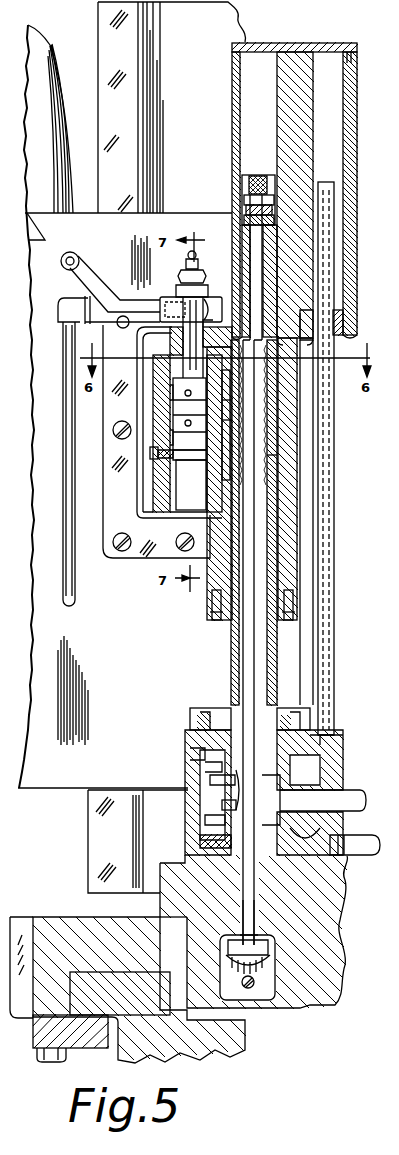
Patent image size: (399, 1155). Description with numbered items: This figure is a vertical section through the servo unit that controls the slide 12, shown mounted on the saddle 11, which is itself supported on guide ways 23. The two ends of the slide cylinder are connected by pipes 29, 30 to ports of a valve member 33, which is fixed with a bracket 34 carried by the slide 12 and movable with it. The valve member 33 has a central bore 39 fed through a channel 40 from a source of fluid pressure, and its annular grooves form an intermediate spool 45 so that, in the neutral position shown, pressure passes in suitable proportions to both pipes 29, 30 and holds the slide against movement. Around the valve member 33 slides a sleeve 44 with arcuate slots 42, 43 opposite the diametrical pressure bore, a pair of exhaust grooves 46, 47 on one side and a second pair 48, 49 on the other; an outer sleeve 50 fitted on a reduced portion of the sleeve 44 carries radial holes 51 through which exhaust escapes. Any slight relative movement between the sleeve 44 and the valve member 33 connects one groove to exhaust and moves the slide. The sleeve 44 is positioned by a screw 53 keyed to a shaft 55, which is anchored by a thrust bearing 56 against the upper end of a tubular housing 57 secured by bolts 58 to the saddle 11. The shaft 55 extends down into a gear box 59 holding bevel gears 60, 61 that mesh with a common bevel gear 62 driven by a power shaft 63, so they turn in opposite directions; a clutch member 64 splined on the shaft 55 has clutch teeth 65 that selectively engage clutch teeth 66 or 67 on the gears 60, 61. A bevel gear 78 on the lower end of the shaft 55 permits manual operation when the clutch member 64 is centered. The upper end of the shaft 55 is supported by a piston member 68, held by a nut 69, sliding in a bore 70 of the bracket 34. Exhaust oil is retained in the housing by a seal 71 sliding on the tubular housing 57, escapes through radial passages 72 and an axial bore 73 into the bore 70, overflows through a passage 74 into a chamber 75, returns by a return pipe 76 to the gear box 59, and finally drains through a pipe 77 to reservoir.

The saddle 11 is at (225, 33).
The slide 12 is at (78, 779).
The guide ways 23 is at (77, 976).
The pipe 29 is at (70, 272).
The pipe 30 is at (63, 544).
The valve member 33 is at (172, 298).
The bracket 34 is at (112, 513).
The central bore 39 is at (216, 296).
The channel 40 is at (185, 259).
The arcuate slot 42 is at (150, 421).
The arcuate slot 43 is at (233, 405).
The sleeve 44 is at (152, 361).
The intermediate spool 45 is at (238, 416).
The arcuate exhaust groove 46 is at (172, 416).
The arcuate exhaust groove 47 is at (300, 386).
The arcuate exhaust groove 48 is at (160, 451).
The arcuate exhaust groove 49 is at (267, 461).
The outer sleeve 50 is at (160, 492).
The radial holes 51 is at (158, 393).
The screw 53 is at (302, 352).
The shaft 55 is at (255, 551).
The thrust bearing 56 is at (298, 496).
The tubular housing 57 is at (275, 668).
The bolts 58 is at (303, 709).
The gear box 59 is at (312, 763).
The bevel gear 60 is at (190, 748).
The bevel gear 61 is at (210, 841).
The common bevel gear 62 is at (318, 834).
The shaft 63 is at (348, 796).
The clutch member 64 is at (215, 789).
The clutch teeth 65 is at (210, 779).
The clutch teeth 66 is at (205, 765).
The clutch teeth 67 is at (212, 821).
The piston member 68 is at (243, 206).
The nut 69 is at (245, 183).
The bore 70 is at (252, 99).
The gasket or seal 71 is at (218, 624).
The radial passages 72 is at (243, 216).
The axial bore 73 is at (242, 197).
The passage 74 is at (287, 51).
The chamber 75 is at (333, 96).
The return pipe 76 is at (333, 256).
The pipe 77 is at (360, 852).
The bevel gear 78 is at (270, 966).